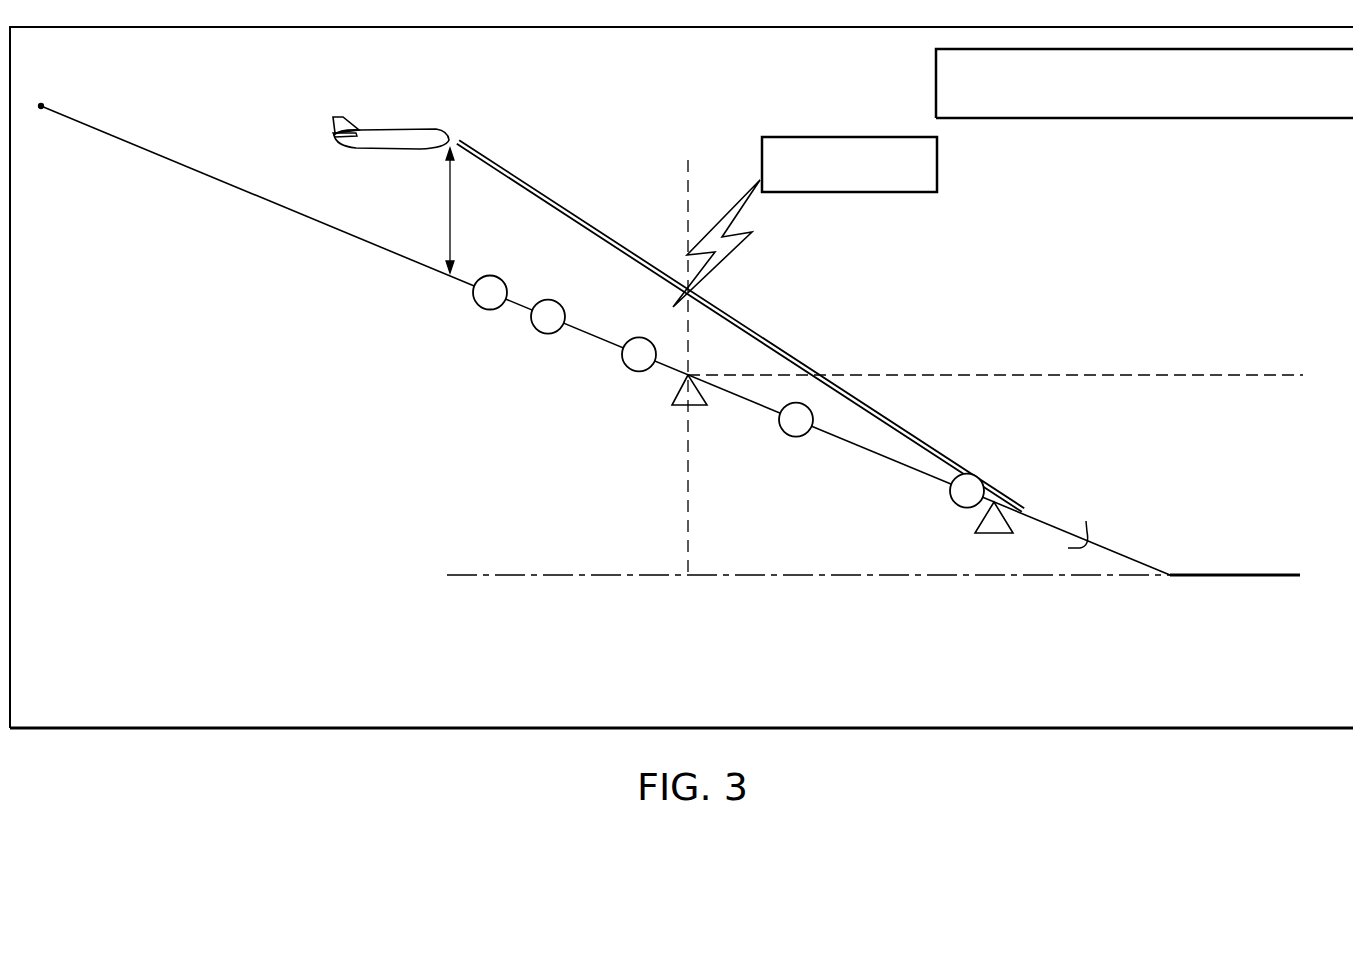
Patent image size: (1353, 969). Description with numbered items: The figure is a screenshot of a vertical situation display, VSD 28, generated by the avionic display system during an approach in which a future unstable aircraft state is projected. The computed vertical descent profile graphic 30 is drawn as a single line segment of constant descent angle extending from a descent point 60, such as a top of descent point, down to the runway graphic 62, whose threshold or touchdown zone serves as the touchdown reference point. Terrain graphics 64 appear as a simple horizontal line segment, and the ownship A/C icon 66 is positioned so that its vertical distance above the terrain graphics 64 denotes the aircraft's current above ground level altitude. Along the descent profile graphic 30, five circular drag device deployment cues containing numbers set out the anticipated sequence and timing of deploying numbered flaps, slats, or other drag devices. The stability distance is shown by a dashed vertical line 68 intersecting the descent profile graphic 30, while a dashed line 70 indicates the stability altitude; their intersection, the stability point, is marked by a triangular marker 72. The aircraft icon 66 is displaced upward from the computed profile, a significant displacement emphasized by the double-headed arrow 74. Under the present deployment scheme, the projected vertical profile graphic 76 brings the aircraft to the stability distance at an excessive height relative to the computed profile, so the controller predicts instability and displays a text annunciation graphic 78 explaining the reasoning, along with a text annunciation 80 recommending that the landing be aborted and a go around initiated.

The vertical situation display (VSD) 28 is at (58, 64).
The computed vertical descent profile graphic 30 is at (275, 203).
The descent point 60 is at (42, 111).
The ownship A/C icon 66 is at (390, 129).
The double-headed arrow 74 is at (449, 213).
The projected vertical profile graphic 76 is at (590, 226).
The text annunciation of predicted instability 78 is at (845, 136).
The text annunciation 80 is at (1160, 120).
The dashed line 70 is at (1040, 374).
The triangular marker 72 is at (662, 409).
The dashed vertical line 68 is at (688, 525).
The terrain graphics 64 is at (1022, 578).
The runway graphic 62 is at (1224, 578).